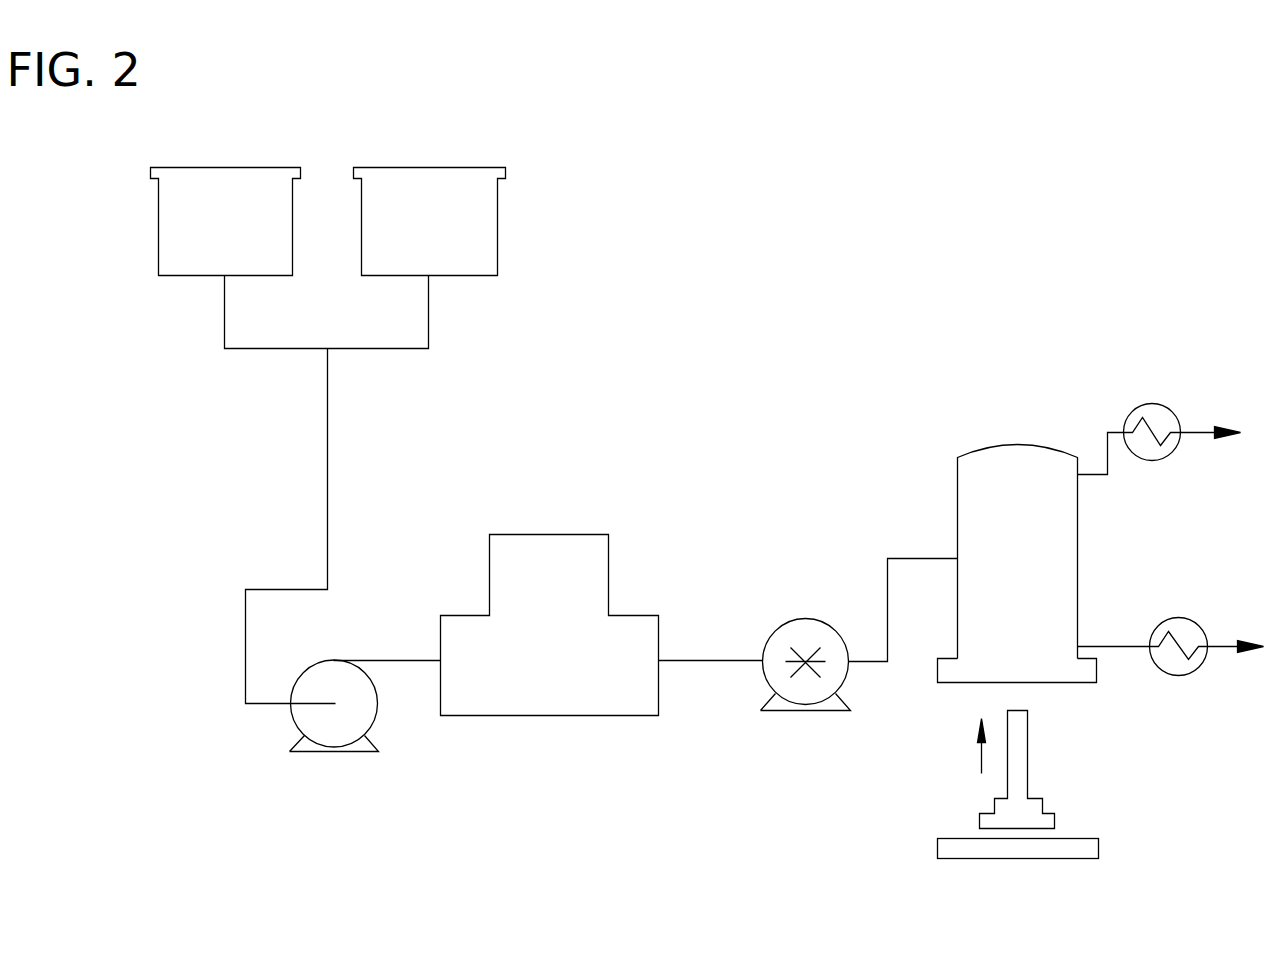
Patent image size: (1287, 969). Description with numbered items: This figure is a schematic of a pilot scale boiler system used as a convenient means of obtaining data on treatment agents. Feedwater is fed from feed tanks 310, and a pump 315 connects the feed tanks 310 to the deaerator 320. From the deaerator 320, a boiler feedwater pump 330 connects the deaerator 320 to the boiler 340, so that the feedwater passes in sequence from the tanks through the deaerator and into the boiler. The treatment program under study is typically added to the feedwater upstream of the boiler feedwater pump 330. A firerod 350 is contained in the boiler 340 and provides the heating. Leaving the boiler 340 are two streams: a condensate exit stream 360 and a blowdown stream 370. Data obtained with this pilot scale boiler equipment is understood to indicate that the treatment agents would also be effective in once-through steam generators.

The feed tanks 310 is at (328, 258).
The pump 315 is at (334, 730).
The deaerator 320 is at (550, 625).
The boiler feedwater pump 330 is at (806, 688).
The boiler 340 is at (1017, 564).
The firerod 350 is at (1018, 785).
The condensate exit stream 360 is at (1182, 414).
The blowdown stream 370 is at (1207, 627).